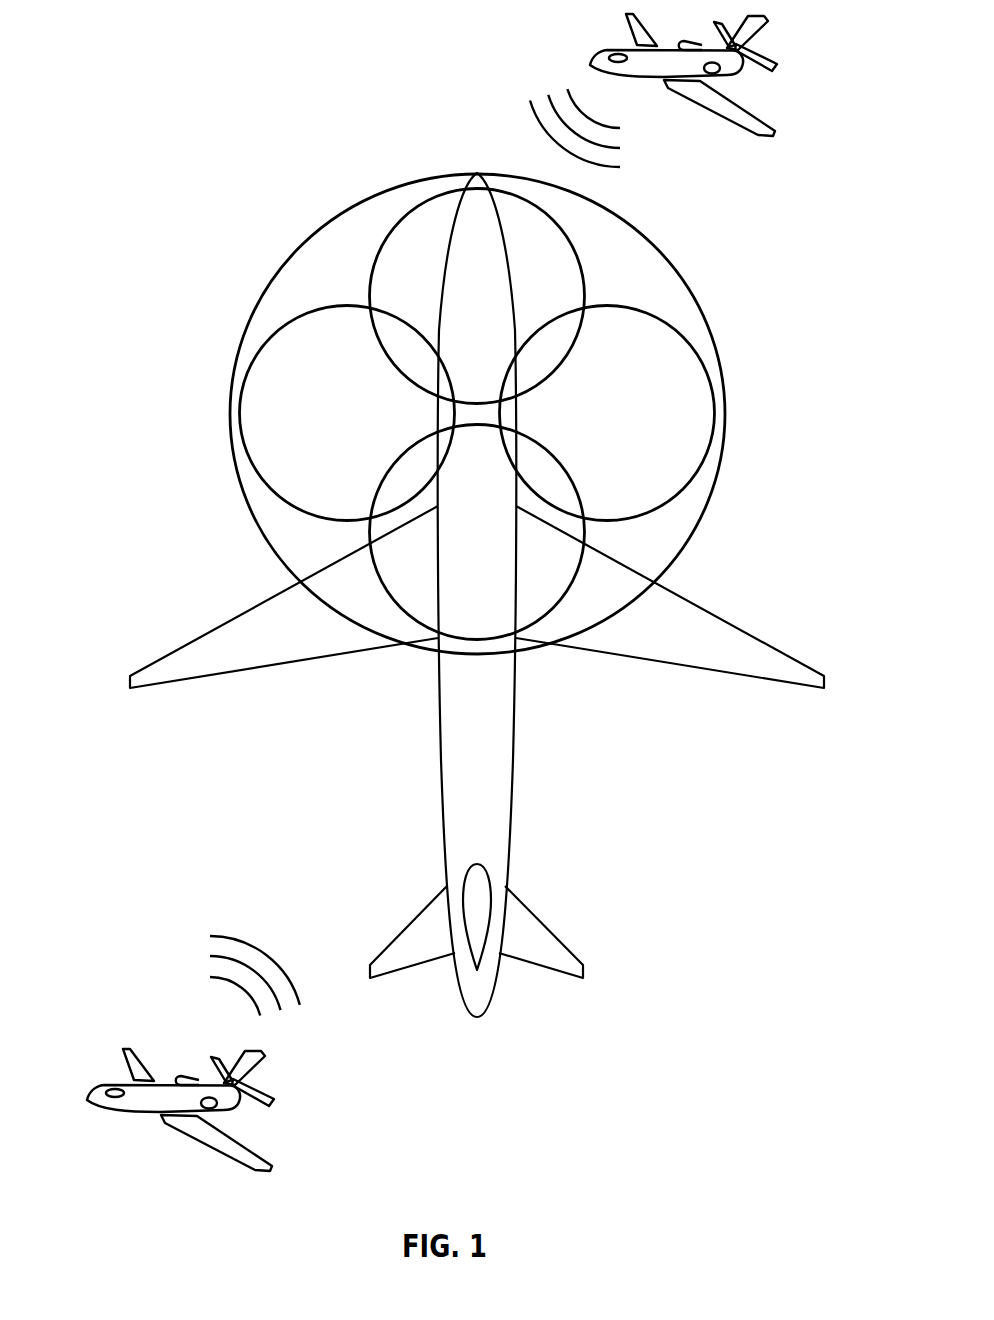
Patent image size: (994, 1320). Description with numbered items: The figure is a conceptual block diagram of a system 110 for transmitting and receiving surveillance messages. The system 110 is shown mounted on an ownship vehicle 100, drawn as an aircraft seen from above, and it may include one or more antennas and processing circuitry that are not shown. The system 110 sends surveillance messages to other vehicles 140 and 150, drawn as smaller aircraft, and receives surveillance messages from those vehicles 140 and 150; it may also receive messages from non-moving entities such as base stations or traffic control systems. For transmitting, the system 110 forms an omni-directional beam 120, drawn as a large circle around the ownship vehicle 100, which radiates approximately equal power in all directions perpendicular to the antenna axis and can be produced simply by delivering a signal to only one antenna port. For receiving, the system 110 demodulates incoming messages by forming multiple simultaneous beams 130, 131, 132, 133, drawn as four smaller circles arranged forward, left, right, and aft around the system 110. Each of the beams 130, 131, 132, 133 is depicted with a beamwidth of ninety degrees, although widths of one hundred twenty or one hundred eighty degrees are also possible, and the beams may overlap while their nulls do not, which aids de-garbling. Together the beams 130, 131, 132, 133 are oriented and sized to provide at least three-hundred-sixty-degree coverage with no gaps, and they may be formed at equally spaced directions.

The ownship vehicle 100 is at (684, 779).
The system 110 is at (478, 402).
The omni-directional beam 120 is at (292, 252).
The beam 130 is at (582, 262).
The beam 131 is at (353, 307).
The beam 132 is at (600, 520).
The beam 133 is at (565, 592).
The vehicle 140 is at (480, 74).
The vehicle 150 is at (98, 992).